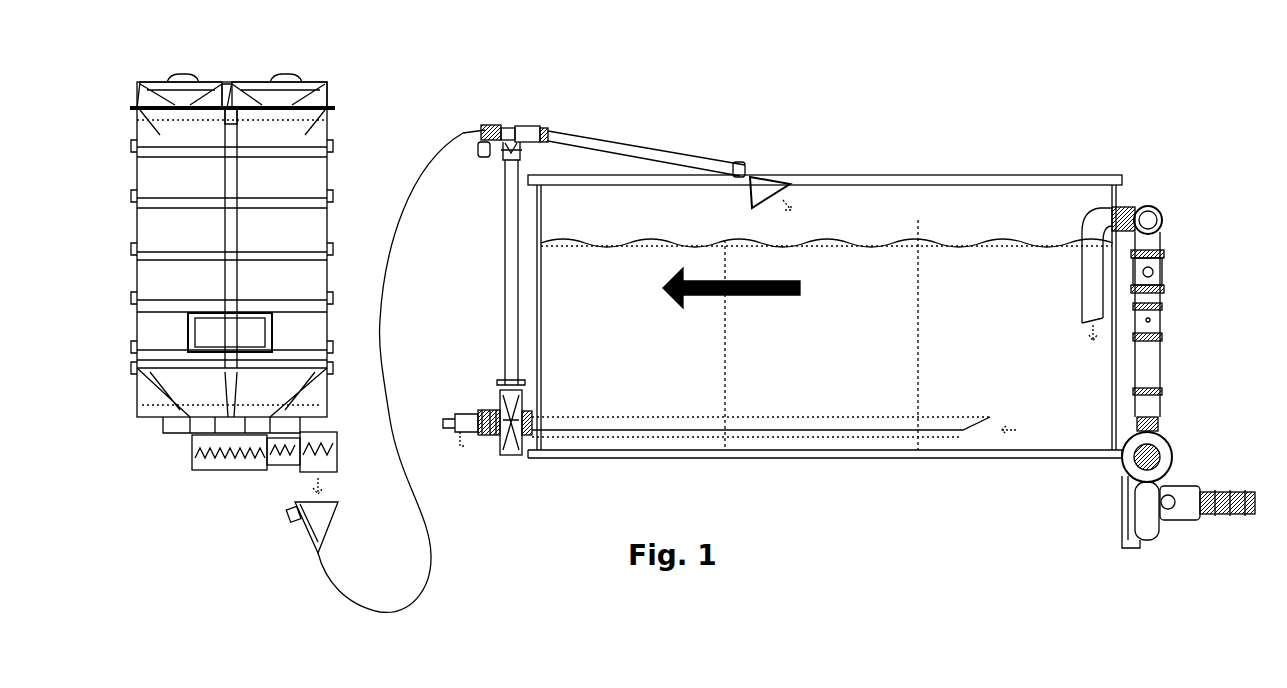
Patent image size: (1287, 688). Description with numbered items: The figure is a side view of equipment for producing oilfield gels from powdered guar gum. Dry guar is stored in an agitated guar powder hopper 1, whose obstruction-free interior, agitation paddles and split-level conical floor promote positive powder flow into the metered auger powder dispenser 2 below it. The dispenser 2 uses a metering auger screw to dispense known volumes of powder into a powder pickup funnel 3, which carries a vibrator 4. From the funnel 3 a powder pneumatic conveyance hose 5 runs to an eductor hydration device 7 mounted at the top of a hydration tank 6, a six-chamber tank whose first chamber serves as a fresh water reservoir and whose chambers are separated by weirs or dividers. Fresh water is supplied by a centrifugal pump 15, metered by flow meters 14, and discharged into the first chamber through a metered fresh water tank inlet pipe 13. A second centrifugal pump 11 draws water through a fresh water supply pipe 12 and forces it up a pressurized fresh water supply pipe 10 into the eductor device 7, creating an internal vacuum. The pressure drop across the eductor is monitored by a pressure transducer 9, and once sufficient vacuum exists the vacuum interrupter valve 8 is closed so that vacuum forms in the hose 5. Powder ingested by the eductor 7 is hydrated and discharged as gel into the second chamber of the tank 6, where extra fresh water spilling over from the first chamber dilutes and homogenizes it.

The agitated guar powder hopper 1 is at (134, 228).
The metered auger powder dispenser 2 is at (190, 450).
The powder pickup funnel 3 is at (310, 541).
The vibrator 4 is at (289, 518).
The powder pneumatic conveyance hose 5 is at (322, 570).
The hydration tank 6 is at (860, 177).
The eductor hydration device 7 is at (518, 128).
The vacuum interrupter valve 8 is at (479, 148).
The pressure transducer 9 is at (500, 160).
The pressurized fresh water supply pipe 10 is at (505, 272).
The centrifugal pump 11 is at (478, 410).
The fresh water supply pipe 12 is at (662, 433).
The metered fresh water tank inlet pipe 13 is at (1085, 284).
The flow meter 14 is at (1163, 273).
The centrifugal pump 15 is at (1175, 483).